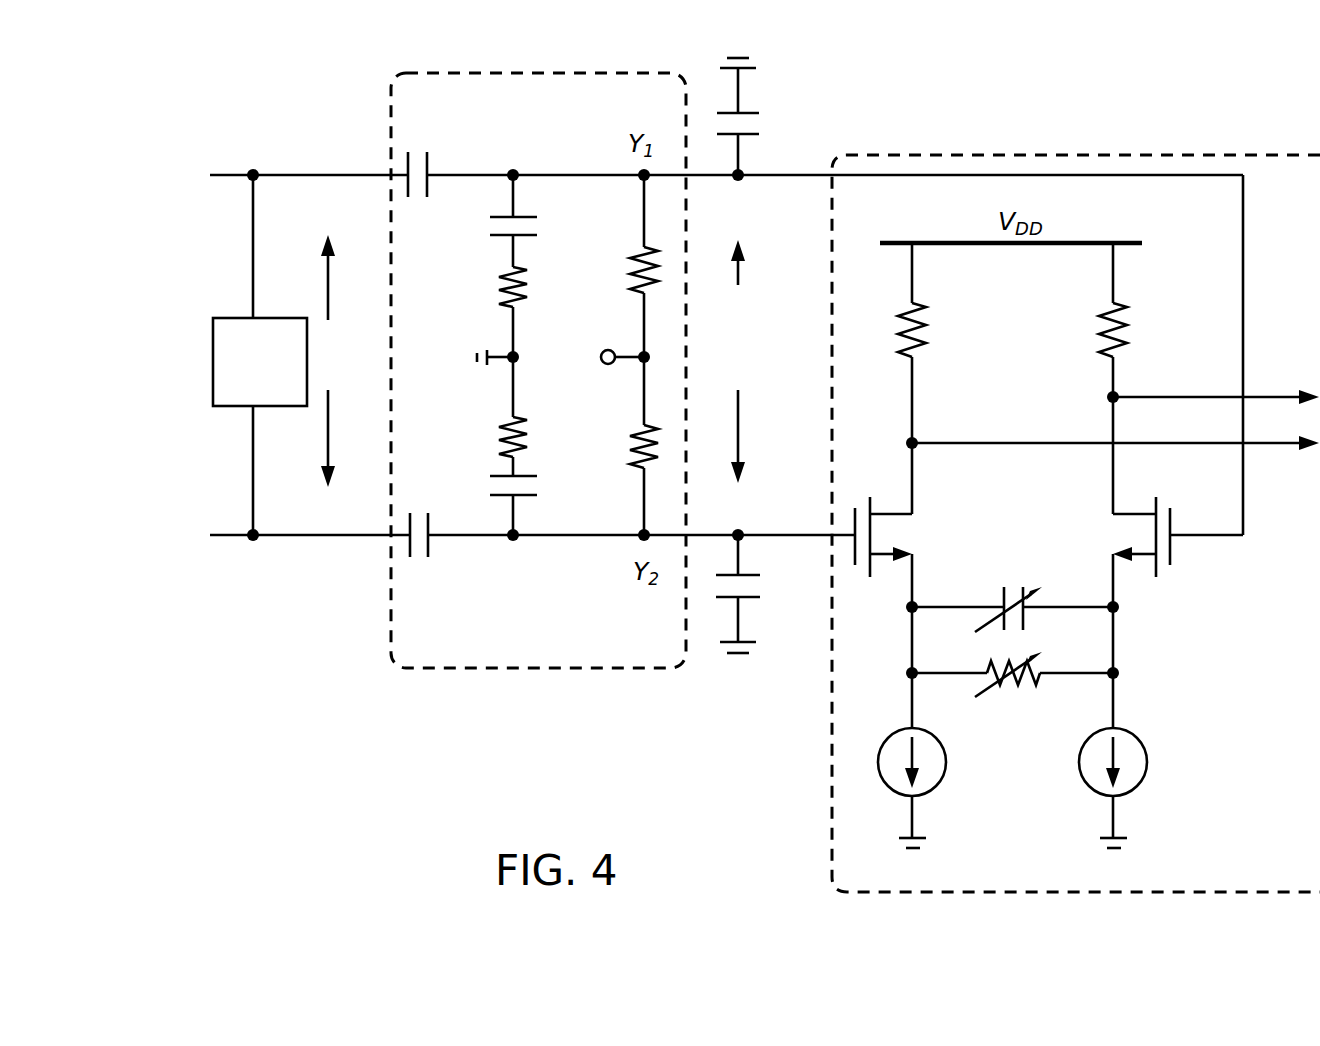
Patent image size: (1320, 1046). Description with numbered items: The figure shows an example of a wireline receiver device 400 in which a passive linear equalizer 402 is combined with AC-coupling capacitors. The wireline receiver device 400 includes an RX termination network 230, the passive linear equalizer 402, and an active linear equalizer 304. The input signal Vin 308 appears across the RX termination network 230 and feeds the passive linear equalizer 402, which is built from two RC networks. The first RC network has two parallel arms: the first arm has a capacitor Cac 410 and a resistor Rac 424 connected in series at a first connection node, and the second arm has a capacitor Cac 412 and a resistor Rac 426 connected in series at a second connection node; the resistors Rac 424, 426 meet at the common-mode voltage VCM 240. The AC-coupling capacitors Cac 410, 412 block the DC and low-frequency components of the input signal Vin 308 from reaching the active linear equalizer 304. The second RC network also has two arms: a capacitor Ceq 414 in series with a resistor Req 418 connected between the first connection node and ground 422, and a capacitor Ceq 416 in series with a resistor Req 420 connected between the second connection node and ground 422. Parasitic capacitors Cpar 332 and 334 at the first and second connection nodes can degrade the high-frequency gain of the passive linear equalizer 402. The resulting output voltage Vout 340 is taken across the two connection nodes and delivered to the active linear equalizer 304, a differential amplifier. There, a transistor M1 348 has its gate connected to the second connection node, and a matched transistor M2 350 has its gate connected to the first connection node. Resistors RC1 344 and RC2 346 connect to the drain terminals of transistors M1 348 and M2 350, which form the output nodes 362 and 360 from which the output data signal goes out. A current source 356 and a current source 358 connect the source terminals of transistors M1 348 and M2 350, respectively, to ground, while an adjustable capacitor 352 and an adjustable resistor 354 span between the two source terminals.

The wireline receiver device 400 is at (245, 84).
The RX termination network 230 is at (213, 365).
The input signal Vin 308 is at (350, 358).
The passive linear equalizer 402 is at (535, 395).
The capacitor Cac 410 is at (417, 179).
The capacitor Cac 412 is at (421, 535).
The capacitor Ceq 414 is at (491, 221).
The capacitor Ceq 416 is at (491, 499).
The resistor Req 418 is at (470, 312).
The resistor Req 420 is at (469, 416).
The ground 422 is at (472, 357).
The resistor Rac 424 is at (621, 266).
The resistor Rac 426 is at (622, 446).
The common-mode voltage VCM 240 is at (603, 371).
The parasitic capacitor Cpar 332 is at (768, 119).
The parasitic capacitor Cpar 334 is at (766, 591).
The output voltage Vout 340 is at (769, 352).
The active linear equalizer 304 is at (1076, 504).
The resistor RC1 344 is at (938, 343).
The resistor RC2 346 is at (1138, 320).
The transistor M1 348 is at (907, 525).
The transistor M2 350 is at (1118, 502).
The adjustable capacitor 352 is at (1012, 581).
The adjustable resistor 354 is at (1012, 677).
The current source 356 is at (946, 760).
The current source 358 is at (1147, 760).
The node 360 is at (1092, 430).
The node 362 is at (1188, 402).